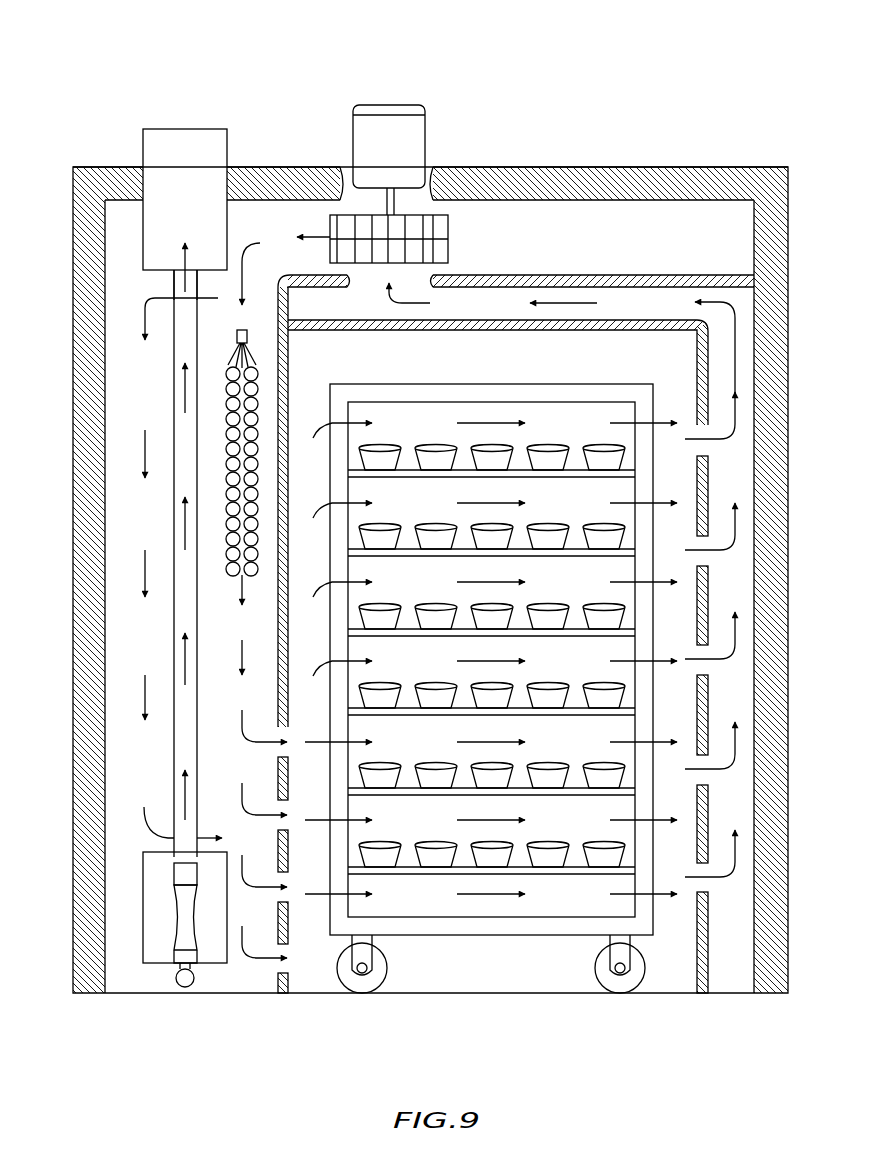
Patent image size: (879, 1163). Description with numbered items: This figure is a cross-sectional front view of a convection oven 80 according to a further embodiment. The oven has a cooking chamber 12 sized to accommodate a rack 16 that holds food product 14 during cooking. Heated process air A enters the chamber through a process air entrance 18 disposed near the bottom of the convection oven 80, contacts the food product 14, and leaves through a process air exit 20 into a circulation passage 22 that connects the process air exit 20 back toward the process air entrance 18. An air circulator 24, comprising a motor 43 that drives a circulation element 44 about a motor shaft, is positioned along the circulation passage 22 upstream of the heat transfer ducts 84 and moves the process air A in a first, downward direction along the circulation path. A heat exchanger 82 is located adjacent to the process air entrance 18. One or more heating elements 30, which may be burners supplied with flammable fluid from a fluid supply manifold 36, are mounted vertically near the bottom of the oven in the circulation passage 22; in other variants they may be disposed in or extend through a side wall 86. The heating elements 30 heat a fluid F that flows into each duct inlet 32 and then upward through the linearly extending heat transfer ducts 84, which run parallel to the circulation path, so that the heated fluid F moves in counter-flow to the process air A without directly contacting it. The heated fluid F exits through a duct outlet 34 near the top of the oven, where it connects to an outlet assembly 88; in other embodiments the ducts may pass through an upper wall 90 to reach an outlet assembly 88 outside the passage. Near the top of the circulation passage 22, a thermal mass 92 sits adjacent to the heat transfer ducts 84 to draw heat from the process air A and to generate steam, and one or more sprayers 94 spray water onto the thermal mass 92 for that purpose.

The convection oven 80 is at (709, 82).
The circulation passage 22 is at (672, 305).
The upper wall 90 is at (283, 167).
The outlet assembly 88 is at (185, 128).
The heat transfer ducts 84 is at (183, 605).
The duct outlet 34 is at (175, 282).
The sprayers 94 is at (237, 337).
The thermal mass 92 is at (233, 483).
The cooking chamber 12 is at (678, 372).
The process air entrance 18 is at (290, 897).
The process air exit 20 is at (700, 445).
The motor 43 is at (400, 105).
The air circulator 24 is at (374, 95).
The circulation element 44 is at (428, 213).
The rack 16 is at (425, 937).
The food product 14 is at (545, 862).
The side wall 86 is at (143, 886).
The duct inlet 32 is at (183, 865).
The heating elements 30 is at (177, 908).
The fluid supply manifold 36 is at (185, 990).
The heat exchanger 82 is at (150, 838).
The process air A is at (576, 300).
The heated fluid F is at (183, 395).